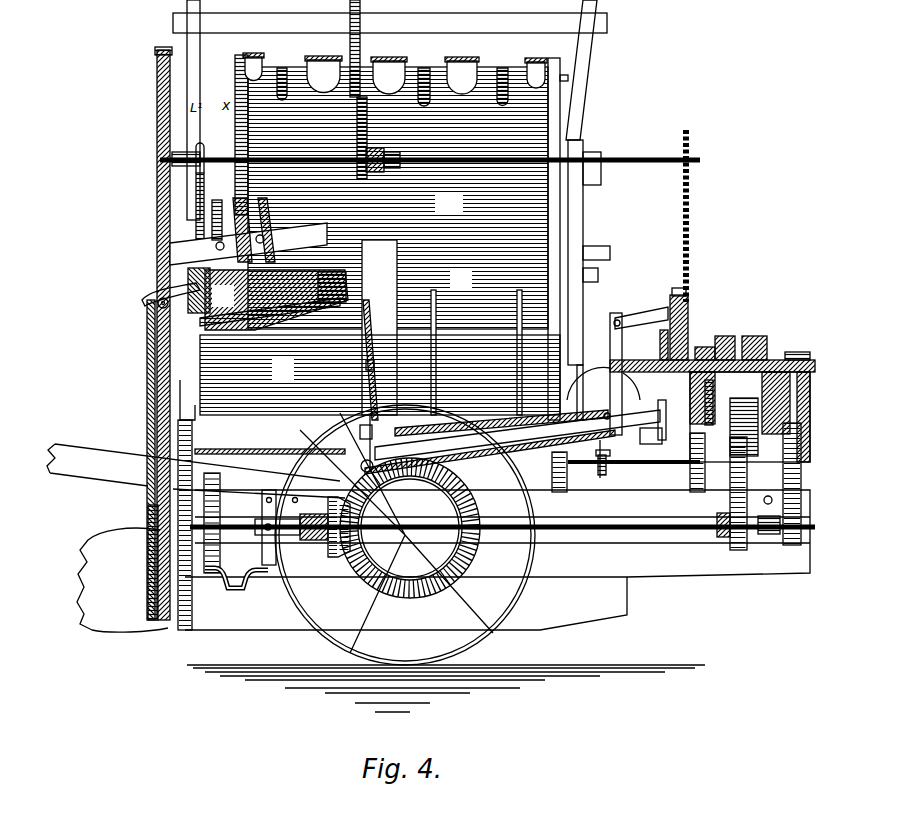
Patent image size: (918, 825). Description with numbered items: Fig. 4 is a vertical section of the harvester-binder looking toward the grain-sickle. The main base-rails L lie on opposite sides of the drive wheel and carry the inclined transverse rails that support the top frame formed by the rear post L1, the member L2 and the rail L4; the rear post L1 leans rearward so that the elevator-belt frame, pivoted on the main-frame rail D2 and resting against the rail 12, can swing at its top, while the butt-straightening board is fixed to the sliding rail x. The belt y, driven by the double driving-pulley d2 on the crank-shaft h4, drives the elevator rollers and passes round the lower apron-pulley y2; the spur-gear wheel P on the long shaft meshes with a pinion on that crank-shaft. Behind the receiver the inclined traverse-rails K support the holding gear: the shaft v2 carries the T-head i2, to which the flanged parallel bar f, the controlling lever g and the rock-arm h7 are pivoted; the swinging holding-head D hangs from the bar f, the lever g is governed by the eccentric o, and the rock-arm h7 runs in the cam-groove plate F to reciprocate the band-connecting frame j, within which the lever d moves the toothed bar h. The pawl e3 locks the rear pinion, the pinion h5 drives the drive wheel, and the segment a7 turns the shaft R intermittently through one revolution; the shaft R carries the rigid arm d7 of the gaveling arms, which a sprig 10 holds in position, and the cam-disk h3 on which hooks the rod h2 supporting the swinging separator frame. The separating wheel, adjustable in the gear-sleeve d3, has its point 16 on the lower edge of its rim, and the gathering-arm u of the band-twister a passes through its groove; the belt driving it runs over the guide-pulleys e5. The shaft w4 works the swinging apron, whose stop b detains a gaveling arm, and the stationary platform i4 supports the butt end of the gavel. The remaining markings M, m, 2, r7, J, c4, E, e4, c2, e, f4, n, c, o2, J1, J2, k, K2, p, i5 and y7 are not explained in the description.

The top frame rail L4 is at (390, 23).
The rear post L1 is at (581, 210).
The top frame member L2 is at (592, 168).
The main base-rail L is at (497, 560).
The sliding rail x is at (646, 216).
The rail 12 is at (590, 275).
The belt y is at (154, 335).
The slide bar cap y7 is at (154, 53).
The guide-pulleys e5 is at (161, 451).
The double driving-pulley d2 is at (143, 562).
The traverse-rails K is at (186, 505).
The shaft R is at (430, 149).
The cam-disk h3 is at (206, 164).
The rod h2 is at (197, 209).
The seed hopper M is at (401, 236).
The hopper partition m is at (417, 327).
The lever d is at (472, 352).
The lower hopper section 2 is at (380, 375).
The sprig 10 is at (351, 89).
The pinion r7 is at (383, 150).
The short rigid arm d7 is at (355, 188).
The slide bar J is at (248, 244).
The point of separator 16 is at (249, 230).
The slide pin c4 is at (313, 299).
The gear-sleeve d3 is at (218, 219).
The cutter E is at (274, 300).
The cutter block e4 is at (187, 290).
The gathering-arm u is at (332, 280).
The connecting rod c2 is at (373, 360).
The pin e is at (375, 369).
The main shaft f4 is at (502, 517).
The stationary platform i4 is at (270, 440).
The main-frame rail D2 is at (405, 535).
The swinging holding-head D is at (410, 528).
The eccentric o is at (493, 646).
The spur-gear wheel P is at (277, 523).
The crank-shaft h4 is at (236, 587).
The rack bar n is at (492, 435).
The lever g is at (517, 446).
The reciprocating bar h is at (490, 451).
The reciprocating frame j is at (365, 444).
The clamp c is at (364, 429).
The lower apron-pulley y2 is at (559, 472).
The T-head i2 is at (612, 374).
The rock-arm h7 is at (641, 311).
The cam-groove plate F is at (685, 324).
The block o2 is at (657, 345).
The shaft v2 is at (715, 360).
The clamp block J1 is at (722, 339).
The clamp block J2 is at (756, 338).
The pawl e3 is at (754, 417).
The gear drum k is at (735, 427).
The band-twister a is at (697, 462).
The pinion h5 is at (731, 493).
The segment a7 is at (769, 499).
The gear K2 is at (744, 484).
The link p is at (653, 427).
The hanger i5 is at (664, 427).
The shaft w4 is at (634, 471).
The main parallel bar f is at (603, 383).
The stop b is at (652, 392).